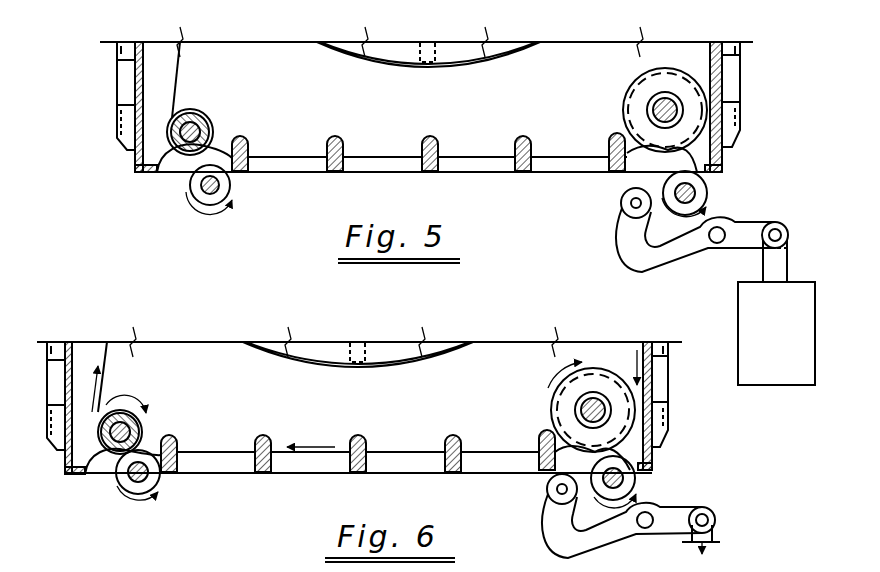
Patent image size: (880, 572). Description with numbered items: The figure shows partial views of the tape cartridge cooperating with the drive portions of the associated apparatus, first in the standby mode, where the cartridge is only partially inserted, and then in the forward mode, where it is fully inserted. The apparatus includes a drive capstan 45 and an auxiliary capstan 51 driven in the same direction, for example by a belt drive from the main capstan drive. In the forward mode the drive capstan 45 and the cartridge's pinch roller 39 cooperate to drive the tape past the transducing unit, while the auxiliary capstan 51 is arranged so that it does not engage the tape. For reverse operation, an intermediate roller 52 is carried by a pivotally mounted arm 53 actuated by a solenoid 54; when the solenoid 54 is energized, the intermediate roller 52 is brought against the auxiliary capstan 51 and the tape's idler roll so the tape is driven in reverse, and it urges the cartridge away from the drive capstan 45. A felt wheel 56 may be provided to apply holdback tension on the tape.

In FIG. 6, the pinch roller 39 is at (146, 409).
In FIG. 5, the drive capstan 45 is at (190, 181).
In FIG. 6, the drive capstan 45 is at (127, 475).
In FIG. 5, the auxiliary capstan 51 is at (706, 192).
In FIG. 5, the intermediate roller 52 is at (621, 205).
In FIG. 5, the pivotally mounted arm 53 is at (697, 250).
In FIG. 5, the solenoid 54 is at (745, 298).
In FIG. 6, the felt wheel 56 is at (538, 430).